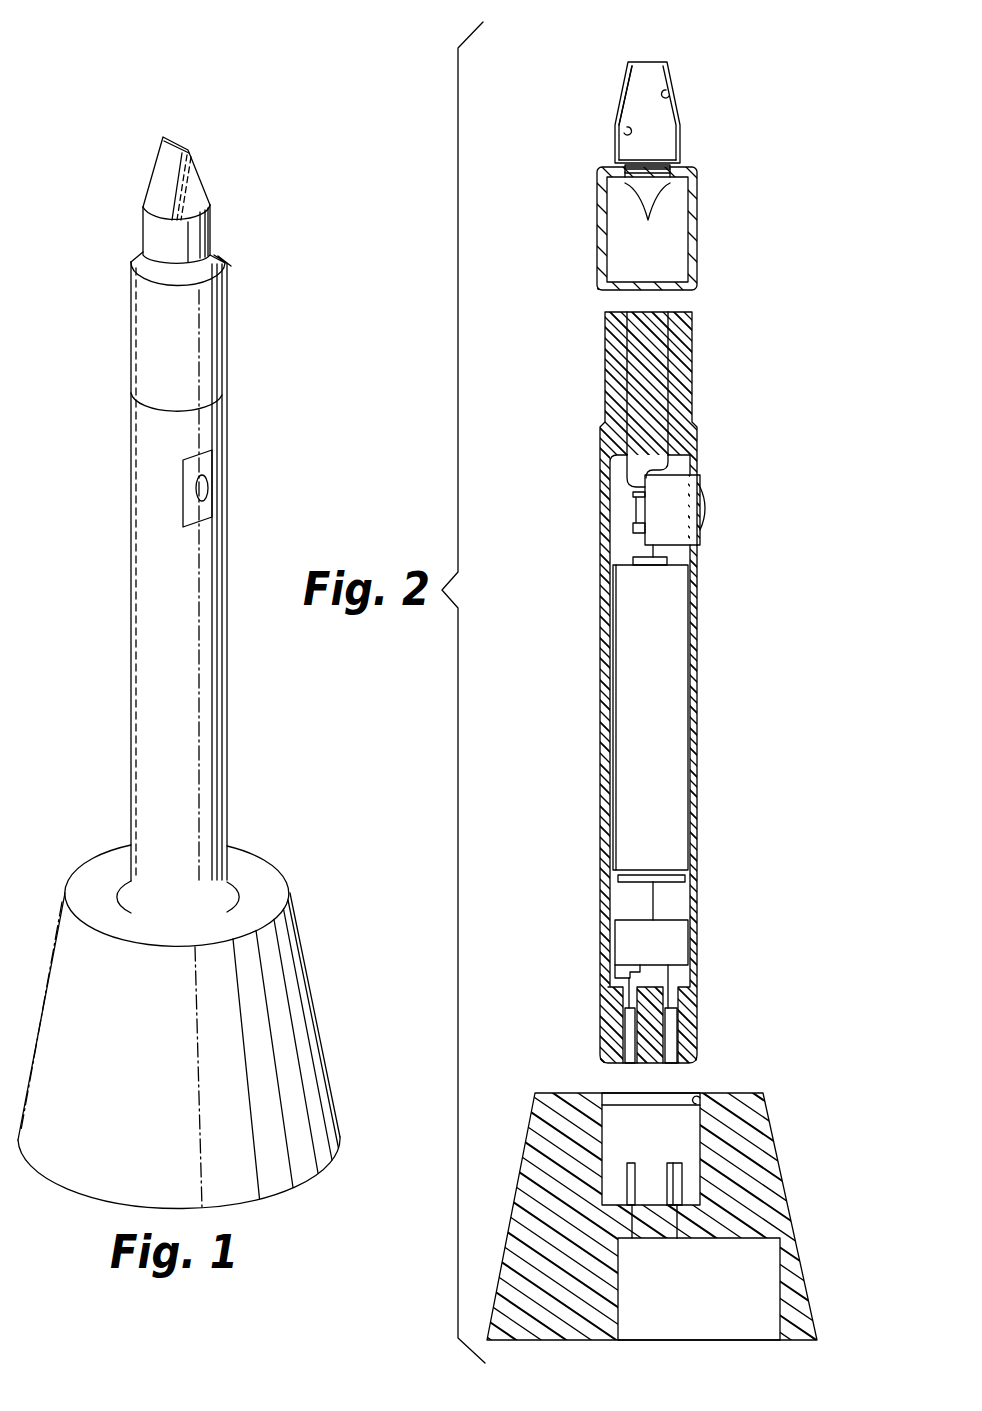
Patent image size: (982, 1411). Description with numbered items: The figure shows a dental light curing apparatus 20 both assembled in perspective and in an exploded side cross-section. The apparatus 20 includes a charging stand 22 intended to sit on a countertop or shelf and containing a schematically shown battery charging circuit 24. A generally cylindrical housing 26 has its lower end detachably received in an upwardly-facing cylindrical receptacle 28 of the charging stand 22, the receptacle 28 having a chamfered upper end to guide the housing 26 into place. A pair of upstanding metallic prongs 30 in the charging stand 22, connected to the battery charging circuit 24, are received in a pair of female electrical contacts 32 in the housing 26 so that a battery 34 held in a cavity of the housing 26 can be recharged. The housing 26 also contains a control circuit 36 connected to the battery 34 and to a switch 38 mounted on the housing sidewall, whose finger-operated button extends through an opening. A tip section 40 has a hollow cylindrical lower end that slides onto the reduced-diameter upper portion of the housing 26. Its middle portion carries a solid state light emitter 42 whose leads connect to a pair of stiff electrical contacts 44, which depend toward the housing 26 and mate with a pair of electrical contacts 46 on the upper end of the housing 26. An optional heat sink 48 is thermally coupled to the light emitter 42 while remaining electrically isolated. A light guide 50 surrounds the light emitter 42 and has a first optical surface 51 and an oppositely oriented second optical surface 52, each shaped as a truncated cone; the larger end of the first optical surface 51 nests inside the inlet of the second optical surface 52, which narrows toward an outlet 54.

In FIG. 1, the dental light curing apparatus 20 is at (243, 146).
In FIG. 2, the dental light curing apparatus 20 is at (736, 50).
In FIG. 1, the charging stand 22 is at (297, 977).
In FIG. 2, the charging stand 22 is at (773, 1162).
In FIG. 2, the battery charging circuit 24 is at (717, 1314).
In FIG. 1, the housing 26 is at (212, 705).
In FIG. 2, the housing 26 is at (697, 442).
In FIG. 2, the cylindrical receptacle 28 is at (700, 1098).
In FIG. 2, the metallic prongs 30 is at (669, 1163).
In FIG. 2, the female electrical contacts 32 is at (668, 1062).
In FIG. 2, the battery 34 is at (675, 667).
In FIG. 2, the control circuit 36 is at (678, 942).
In FIG. 1, the switch 38 is at (207, 488).
In FIG. 2, the switch 38 is at (707, 508).
In FIG. 1, the tip section 40 is at (218, 226).
In FIG. 2, the tip section 40 is at (703, 194).
In FIG. 2, the solid state light emitter 42 is at (650, 150).
In FIG. 2, the electrical contacts 44 is at (647, 215).
In FIG. 2, the electrical contacts 46 is at (627, 310).
In FIG. 2, the heat sink 48 is at (627, 170).
In FIG. 2, the light guide 50 is at (637, 83).
In FIG. 2, the first optical surface 51 is at (627, 127).
In FIG. 2, the second optical surface 52 is at (666, 90).
In FIG. 1, the outlet 54 is at (177, 145).
In FIG. 2, the outlet 54 is at (652, 60).